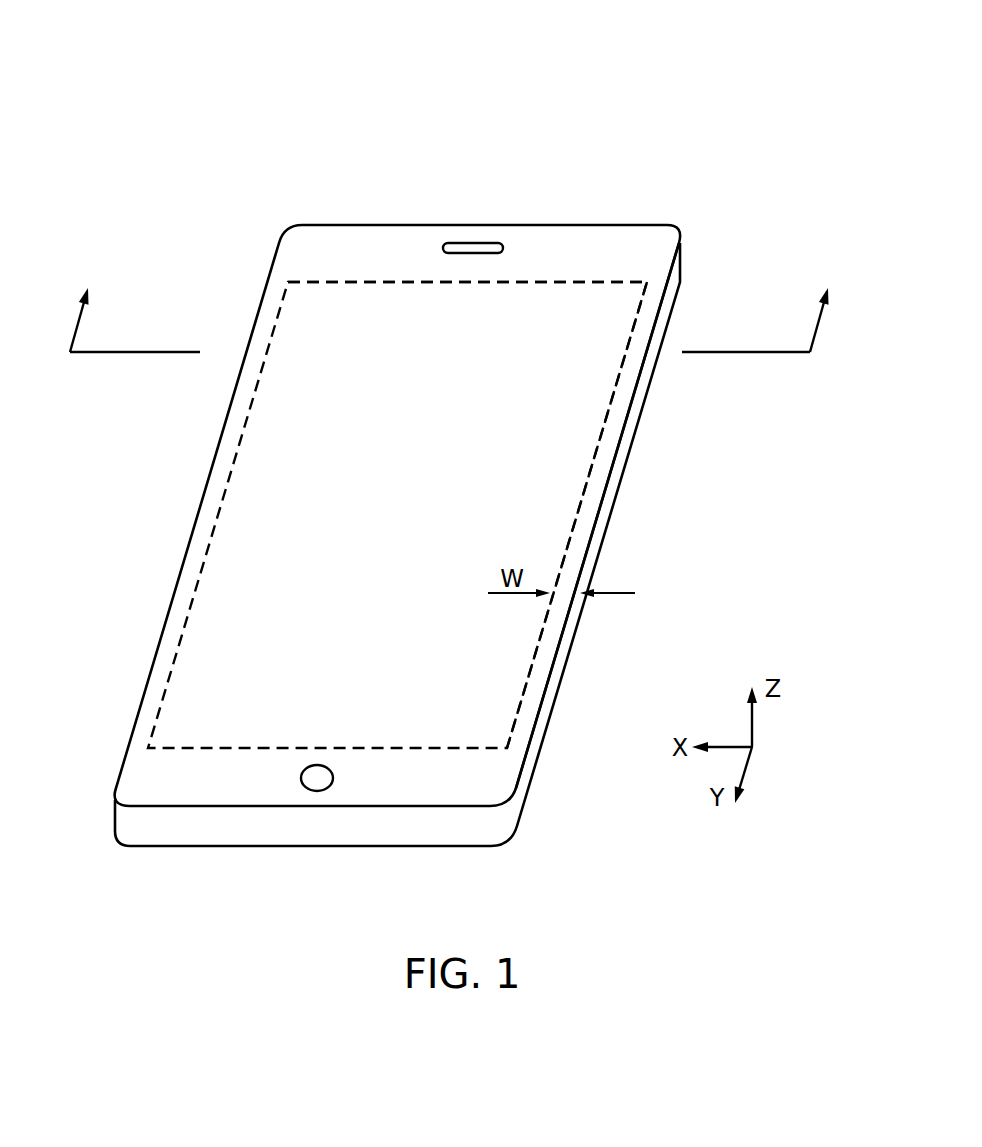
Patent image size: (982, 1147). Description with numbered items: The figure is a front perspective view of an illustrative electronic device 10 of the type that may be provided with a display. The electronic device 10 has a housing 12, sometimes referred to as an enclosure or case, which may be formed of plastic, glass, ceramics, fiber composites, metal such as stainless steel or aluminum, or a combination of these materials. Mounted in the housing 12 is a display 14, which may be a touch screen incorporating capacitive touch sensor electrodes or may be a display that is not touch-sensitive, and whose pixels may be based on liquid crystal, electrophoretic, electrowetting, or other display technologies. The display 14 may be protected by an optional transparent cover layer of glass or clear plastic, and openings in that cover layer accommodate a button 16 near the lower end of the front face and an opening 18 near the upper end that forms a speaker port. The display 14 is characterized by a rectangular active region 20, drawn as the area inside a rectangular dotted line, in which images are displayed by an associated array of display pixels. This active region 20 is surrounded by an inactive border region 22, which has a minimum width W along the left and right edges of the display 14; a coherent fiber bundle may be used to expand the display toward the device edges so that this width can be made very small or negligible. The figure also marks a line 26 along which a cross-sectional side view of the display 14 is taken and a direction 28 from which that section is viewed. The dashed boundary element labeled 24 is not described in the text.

The electronic device 10 is at (689, 53).
The housing 12 is at (670, 296).
The display 14 is at (248, 563).
The button 16 is at (317, 792).
The opening 18 is at (475, 243).
The rectangular active region 20 is at (543, 282).
The inactive border region 22 is at (605, 445).
The boundary between active and inactive regions 24 is at (582, 495).
The line 26 is at (128, 352).
The direction 28 is at (75, 323).